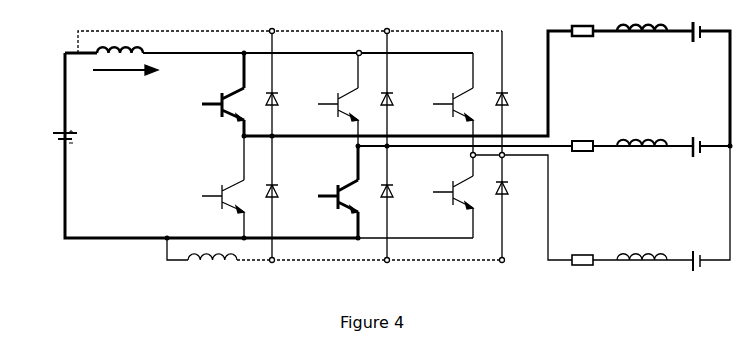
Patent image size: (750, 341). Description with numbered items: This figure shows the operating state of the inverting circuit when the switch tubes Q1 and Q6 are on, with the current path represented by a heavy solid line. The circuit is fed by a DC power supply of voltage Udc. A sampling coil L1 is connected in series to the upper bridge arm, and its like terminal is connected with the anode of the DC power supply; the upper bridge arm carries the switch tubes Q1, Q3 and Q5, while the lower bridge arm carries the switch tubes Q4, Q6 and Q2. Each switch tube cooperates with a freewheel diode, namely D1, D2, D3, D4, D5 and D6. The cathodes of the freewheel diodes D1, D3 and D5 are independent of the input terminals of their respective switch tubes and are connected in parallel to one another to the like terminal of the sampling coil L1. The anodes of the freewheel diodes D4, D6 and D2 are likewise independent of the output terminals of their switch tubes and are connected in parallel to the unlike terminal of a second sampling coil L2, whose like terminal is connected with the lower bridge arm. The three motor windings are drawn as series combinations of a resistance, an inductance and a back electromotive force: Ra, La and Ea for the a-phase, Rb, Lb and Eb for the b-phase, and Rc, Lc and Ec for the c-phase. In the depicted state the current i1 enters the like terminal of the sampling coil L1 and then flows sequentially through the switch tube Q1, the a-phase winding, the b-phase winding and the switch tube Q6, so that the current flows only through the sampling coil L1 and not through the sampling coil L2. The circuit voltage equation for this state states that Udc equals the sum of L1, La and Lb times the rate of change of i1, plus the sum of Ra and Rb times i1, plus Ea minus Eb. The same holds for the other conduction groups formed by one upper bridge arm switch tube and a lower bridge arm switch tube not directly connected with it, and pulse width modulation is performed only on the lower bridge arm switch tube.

The DC power supply voltage Udc is at (45, 134).
The sampling coil L1 is at (114, 43).
The current i1 is at (125, 79).
The sampling coil L2 is at (202, 268).
The switch tube Q1 is at (219, 102).
The switch tube Q2 is at (449, 190).
The switch tube Q3 is at (334, 102).
The switch tube Q4 is at (219, 194).
The switch tube Q5 is at (449, 102).
The switch tube Q6 is at (334, 194).
The freewheel diode D1 is at (282, 111).
The freewheel diode D2 is at (512, 200).
The freewheel diode D3 is at (397, 111).
The freewheel diode D4 is at (282, 204).
The freewheel diode D5 is at (512, 111).
The freewheel diode D6 is at (397, 204).
The a-phase winding resistance Ra is at (581, 21).
The a-phase winding inductance La is at (642, 18).
The back electromotive force Ea is at (697, 24).
The b-phase winding resistance Rb is at (581, 136).
The b-phase winding inductance Lb is at (642, 134).
The back electromotive force Eb is at (697, 139).
The c-phase winding resistance Rc is at (582, 250).
The c-phase winding inductance Lc is at (642, 248).
The back electromotive force Ec is at (697, 253).